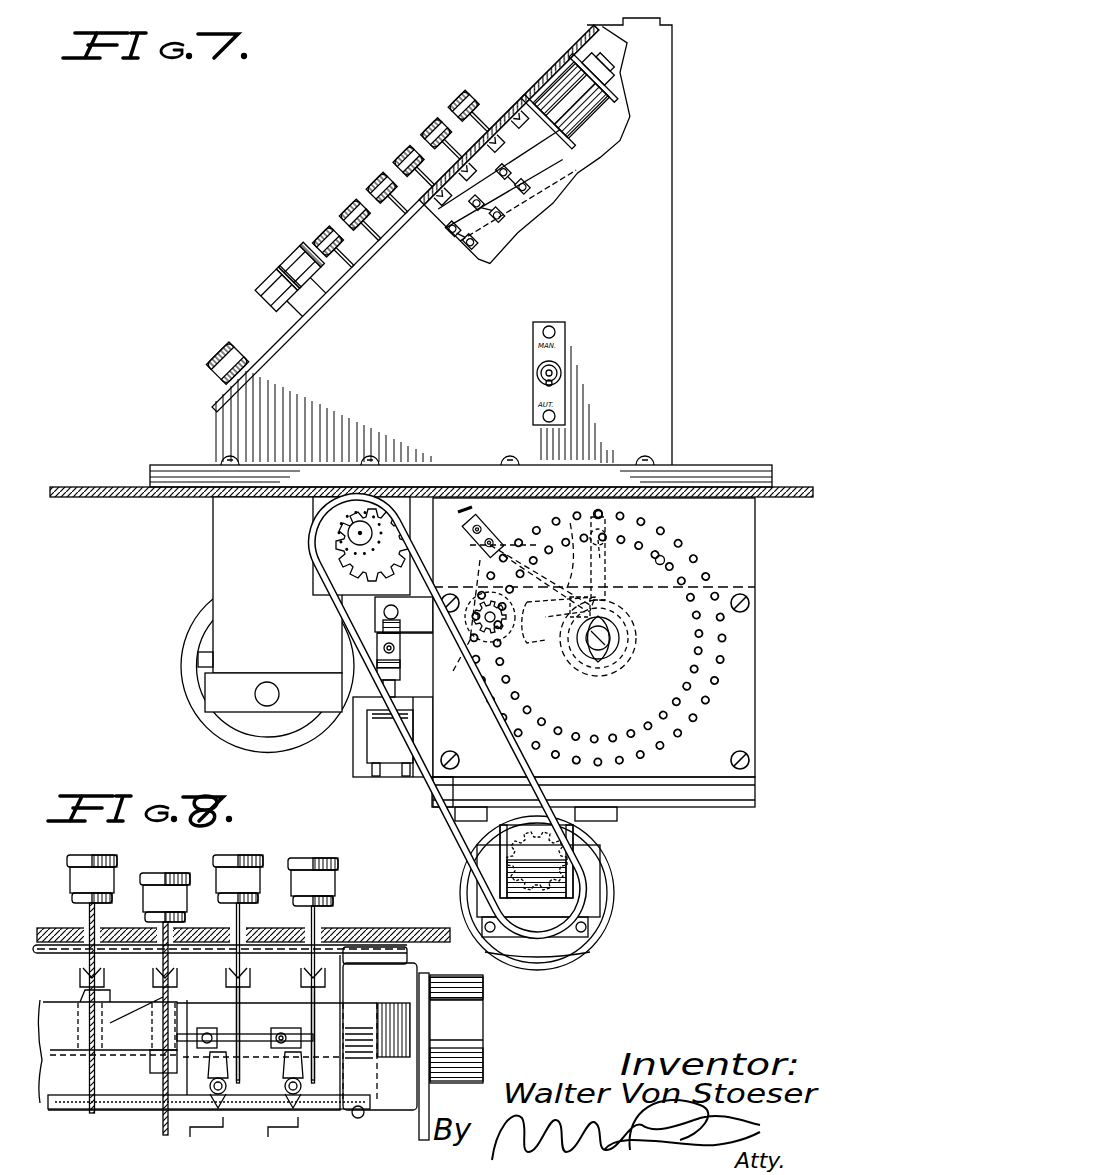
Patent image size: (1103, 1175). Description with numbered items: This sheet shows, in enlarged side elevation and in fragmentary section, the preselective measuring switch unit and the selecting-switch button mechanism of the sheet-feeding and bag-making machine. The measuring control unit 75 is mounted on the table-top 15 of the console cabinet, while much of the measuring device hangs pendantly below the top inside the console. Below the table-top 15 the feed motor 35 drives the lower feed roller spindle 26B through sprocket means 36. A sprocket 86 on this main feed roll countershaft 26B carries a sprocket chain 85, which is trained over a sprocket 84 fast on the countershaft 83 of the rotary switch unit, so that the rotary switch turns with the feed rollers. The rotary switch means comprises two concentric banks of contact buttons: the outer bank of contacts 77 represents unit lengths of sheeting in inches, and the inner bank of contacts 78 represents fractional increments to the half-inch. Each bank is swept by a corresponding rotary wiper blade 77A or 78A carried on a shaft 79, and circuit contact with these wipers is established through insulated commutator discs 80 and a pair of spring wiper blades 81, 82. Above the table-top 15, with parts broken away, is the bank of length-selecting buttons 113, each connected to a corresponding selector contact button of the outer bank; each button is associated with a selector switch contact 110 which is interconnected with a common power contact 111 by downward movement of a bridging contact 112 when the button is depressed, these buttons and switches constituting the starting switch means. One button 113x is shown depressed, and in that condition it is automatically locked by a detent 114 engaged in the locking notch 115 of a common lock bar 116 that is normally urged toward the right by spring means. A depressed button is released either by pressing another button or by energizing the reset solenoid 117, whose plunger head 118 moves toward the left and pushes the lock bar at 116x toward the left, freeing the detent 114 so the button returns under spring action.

In FIG. 7, the measuring control unit 75 is at (688, 243).
In FIG. 7, the table-top 15 is at (800, 492).
In FIG. 7, the length-selecting button 113 is at (464, 99).
In FIG. 8, the length-selecting button 113 is at (320, 884).
In FIG. 8, the depressed button 113x is at (157, 886).
In FIG. 7, the plunger head 118 is at (530, 96).
In FIG. 8, the plunger head 118 is at (403, 1057).
In FIG. 7, the reset solenoid 117 is at (537, 120).
In FIG. 8, the reset solenoid 117 is at (474, 1010).
In FIG. 7, the bridging contact 112 is at (513, 157).
In FIG. 8, the bridging contact 112 is at (297, 1027).
In FIG. 7, the common power contact 111 is at (517, 180).
In FIG. 8, the common power contact 111 is at (290, 1048).
In FIG. 8, the selector switch contact 110 is at (299, 1078).
In FIG. 8, the detent 114 is at (195, 1015).
In FIG. 8, the locking notch 115 is at (170, 1015).
In FIG. 8, the common lock bar 116 is at (145, 1050).
In FIG. 8, the lock bar push point 116x is at (367, 1022).
In FIG. 7, the lower feed roller spindle 26B is at (358, 533).
In FIG. 7, the sprocket 86 is at (357, 552).
In FIG. 7, the sprocket means 36 is at (335, 583).
In FIG. 7, the sprocket 84 is at (407, 651).
In FIG. 7, the countershaft 83 is at (472, 657).
In FIG. 7, the sprocket chain 85 is at (506, 540).
In FIG. 7, the spring wiper blade 82 is at (521, 597).
In FIG. 7, the spring wiper blade 81 is at (553, 645).
In FIG. 7, the insulated commutator discs 80 is at (587, 688).
In FIG. 7, the shaft 79 is at (612, 647).
In FIG. 7, the inner bank of contacts 78 is at (680, 577).
In FIG. 7, the rotary wiper blade 78A is at (622, 558).
In FIG. 7, the outer bank of contacts 77 is at (721, 582).
In FIG. 7, the rotary wiper blade 77A is at (612, 517).
In FIG. 7, the feed motor 35 is at (597, 885).